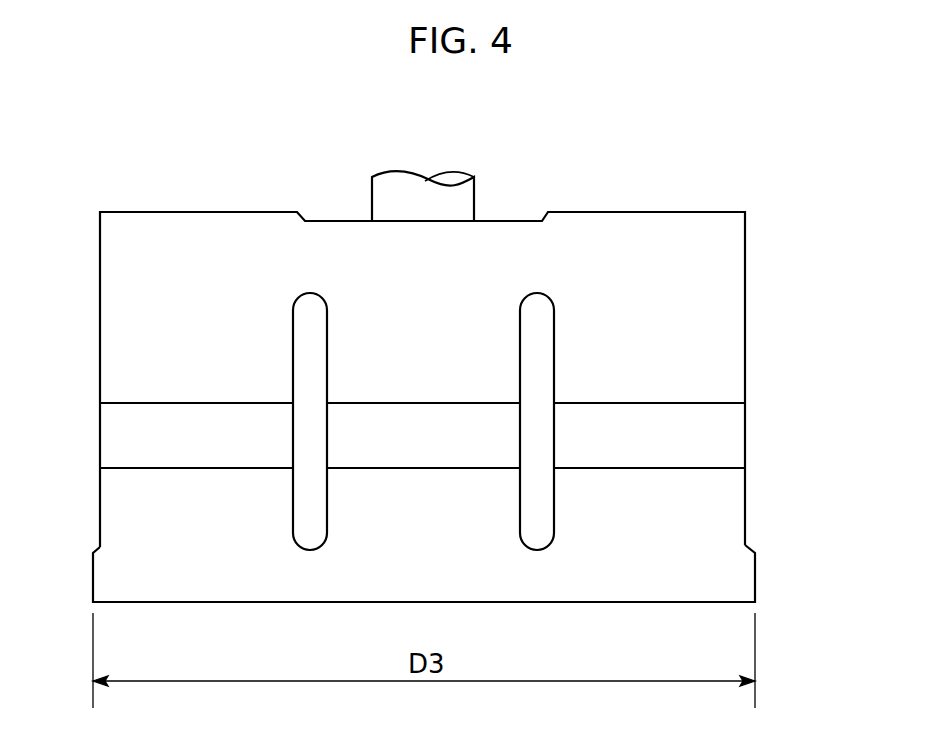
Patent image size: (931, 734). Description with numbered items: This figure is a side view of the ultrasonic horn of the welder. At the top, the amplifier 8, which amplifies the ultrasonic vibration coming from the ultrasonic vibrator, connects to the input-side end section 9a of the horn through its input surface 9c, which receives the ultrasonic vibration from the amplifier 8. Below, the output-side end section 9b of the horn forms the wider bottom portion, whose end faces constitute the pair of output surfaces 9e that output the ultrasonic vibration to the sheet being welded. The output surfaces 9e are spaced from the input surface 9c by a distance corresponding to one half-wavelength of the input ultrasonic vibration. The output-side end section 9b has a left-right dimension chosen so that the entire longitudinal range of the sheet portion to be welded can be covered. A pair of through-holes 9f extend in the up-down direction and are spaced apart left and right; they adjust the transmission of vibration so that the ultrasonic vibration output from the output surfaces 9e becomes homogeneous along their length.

The amplifier 8 is at (467, 200).
The input-side end section 9a is at (765, 237).
The output-side end section 9b is at (778, 573).
The input surface 9c is at (668, 212).
The output surfaces 9e is at (645, 602).
The through-holes 9f is at (317, 350).